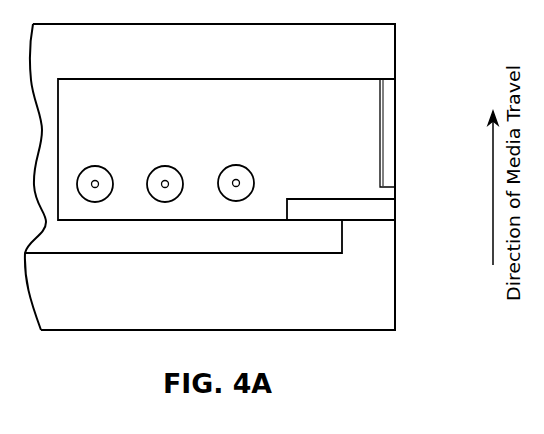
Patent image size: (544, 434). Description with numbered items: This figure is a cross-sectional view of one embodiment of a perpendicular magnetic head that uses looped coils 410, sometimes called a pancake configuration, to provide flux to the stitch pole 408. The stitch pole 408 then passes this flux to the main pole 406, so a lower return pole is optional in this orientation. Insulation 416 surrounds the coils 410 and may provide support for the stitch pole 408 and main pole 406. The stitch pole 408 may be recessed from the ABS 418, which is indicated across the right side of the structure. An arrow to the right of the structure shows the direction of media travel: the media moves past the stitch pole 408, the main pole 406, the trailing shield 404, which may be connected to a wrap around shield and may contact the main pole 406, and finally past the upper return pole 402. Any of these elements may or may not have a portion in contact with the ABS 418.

The upper return pole 402 is at (302, 61).
The trailing shield 404 is at (396, 114).
The main pole 406 is at (396, 205).
The stitch pole 408 is at (247, 248).
The looped coils 410 is at (91, 166).
The insulation 416 is at (341, 158).
The ABS 418 is at (398, 42).